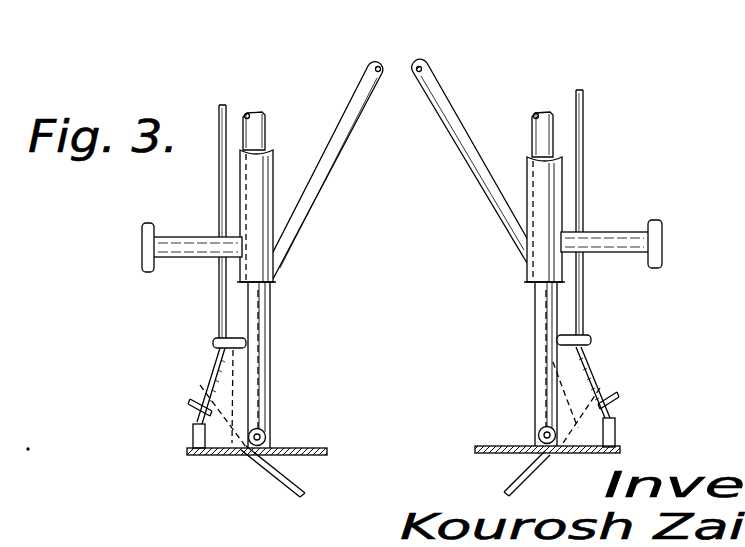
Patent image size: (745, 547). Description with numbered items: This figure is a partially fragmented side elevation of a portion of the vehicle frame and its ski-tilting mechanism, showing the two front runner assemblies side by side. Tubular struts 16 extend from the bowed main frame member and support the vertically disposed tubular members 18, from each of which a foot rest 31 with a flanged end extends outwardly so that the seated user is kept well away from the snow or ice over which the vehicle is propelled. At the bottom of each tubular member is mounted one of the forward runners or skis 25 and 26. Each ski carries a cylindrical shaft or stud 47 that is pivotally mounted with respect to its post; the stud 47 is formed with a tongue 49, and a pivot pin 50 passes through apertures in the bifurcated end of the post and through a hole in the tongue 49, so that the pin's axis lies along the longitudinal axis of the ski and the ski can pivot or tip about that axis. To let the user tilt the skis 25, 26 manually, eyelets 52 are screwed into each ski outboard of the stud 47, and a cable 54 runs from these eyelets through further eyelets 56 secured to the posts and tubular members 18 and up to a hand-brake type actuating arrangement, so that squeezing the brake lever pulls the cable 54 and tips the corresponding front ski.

The tubular struts 16 is at (470, 152).
The tubular members 18 is at (268, 165).
The front runner or ski 25 is at (212, 455).
The front runner or ski 26 is at (527, 468).
The foot rests 31 is at (168, 262).
The cylindrical shaft or stud 47 is at (268, 446).
The tongue 49 is at (262, 356).
The pivot pin 50 is at (270, 397).
The eyelets 52 is at (200, 385).
The cable 54 is at (222, 292).
The eyelets 56 is at (233, 340).